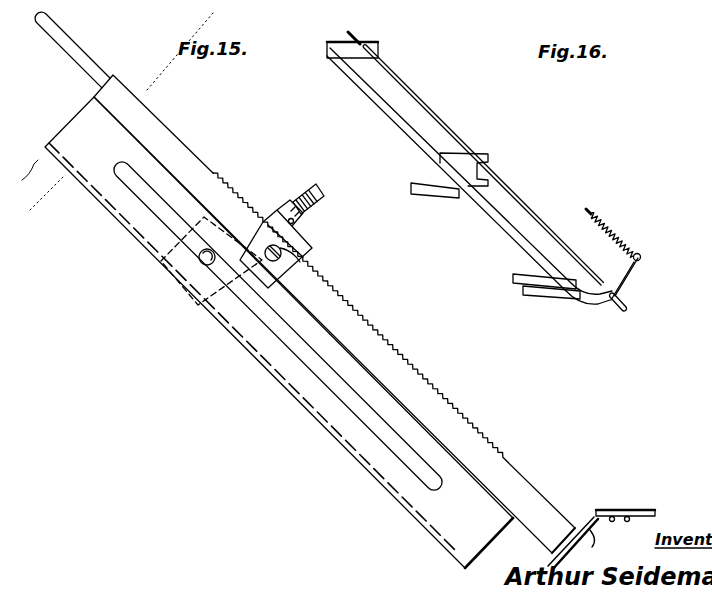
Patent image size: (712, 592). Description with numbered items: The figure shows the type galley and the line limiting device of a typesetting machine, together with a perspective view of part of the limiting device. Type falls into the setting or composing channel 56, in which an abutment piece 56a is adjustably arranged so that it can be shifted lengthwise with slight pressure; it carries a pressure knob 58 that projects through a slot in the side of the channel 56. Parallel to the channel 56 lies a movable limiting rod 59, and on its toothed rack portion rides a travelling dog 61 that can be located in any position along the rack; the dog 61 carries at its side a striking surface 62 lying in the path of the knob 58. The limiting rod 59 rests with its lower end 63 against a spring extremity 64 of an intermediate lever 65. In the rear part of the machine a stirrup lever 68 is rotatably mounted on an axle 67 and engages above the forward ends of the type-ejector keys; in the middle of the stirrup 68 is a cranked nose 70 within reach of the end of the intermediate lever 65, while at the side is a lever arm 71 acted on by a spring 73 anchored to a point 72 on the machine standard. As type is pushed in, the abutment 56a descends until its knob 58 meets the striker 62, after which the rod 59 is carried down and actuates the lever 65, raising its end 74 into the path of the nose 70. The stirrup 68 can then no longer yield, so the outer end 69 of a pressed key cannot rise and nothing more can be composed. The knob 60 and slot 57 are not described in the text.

In FIG. 15, the type channel 56 is at (110, 203).
In FIG. 15, the abutment piece 56a is at (173, 252).
In FIG. 15, the slot 57 is at (295, 345).
In FIG. 15, the pressure knob 58 is at (198, 255).
In FIG. 15, the limiting rod 59 is at (173, 152).
In FIG. 15, the thumb screw 60 is at (240, 197).
In FIG. 15, the travelling dog 61 is at (298, 240).
In FIG. 15, the striking surface 62 is at (234, 255).
In FIG. 15, the lower end of limiting rod 63 is at (545, 517).
In FIG. 15, the spring extremity 64 is at (584, 544).
In FIG. 15, the intermediate lever 65 is at (640, 509).
In FIG. 16, the intermediate lever 65 is at (437, 197).
In FIG. 16, the axle 67 is at (623, 312).
In FIG. 16, the stirrup lever 68 is at (405, 122).
In FIG. 16, the outer end of key 69 is at (470, 170).
In FIG. 16, the cranked nose 70 is at (487, 177).
In FIG. 16, the lever arm 71 is at (627, 282).
In FIG. 16, the anchoring point 72 is at (590, 211).
In FIG. 16, the spring 73 is at (612, 234).
In FIG. 16, the front end of intermediate lever 74 is at (478, 188).